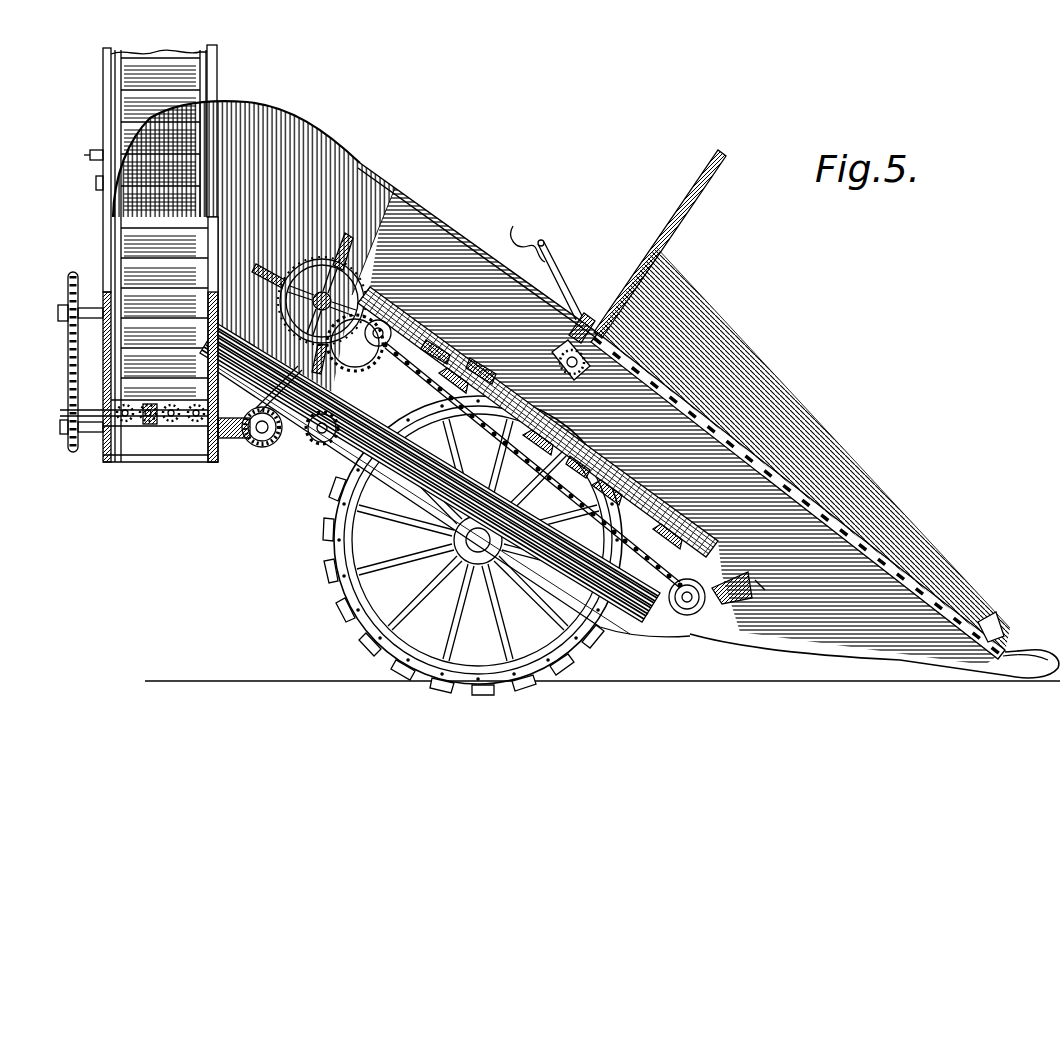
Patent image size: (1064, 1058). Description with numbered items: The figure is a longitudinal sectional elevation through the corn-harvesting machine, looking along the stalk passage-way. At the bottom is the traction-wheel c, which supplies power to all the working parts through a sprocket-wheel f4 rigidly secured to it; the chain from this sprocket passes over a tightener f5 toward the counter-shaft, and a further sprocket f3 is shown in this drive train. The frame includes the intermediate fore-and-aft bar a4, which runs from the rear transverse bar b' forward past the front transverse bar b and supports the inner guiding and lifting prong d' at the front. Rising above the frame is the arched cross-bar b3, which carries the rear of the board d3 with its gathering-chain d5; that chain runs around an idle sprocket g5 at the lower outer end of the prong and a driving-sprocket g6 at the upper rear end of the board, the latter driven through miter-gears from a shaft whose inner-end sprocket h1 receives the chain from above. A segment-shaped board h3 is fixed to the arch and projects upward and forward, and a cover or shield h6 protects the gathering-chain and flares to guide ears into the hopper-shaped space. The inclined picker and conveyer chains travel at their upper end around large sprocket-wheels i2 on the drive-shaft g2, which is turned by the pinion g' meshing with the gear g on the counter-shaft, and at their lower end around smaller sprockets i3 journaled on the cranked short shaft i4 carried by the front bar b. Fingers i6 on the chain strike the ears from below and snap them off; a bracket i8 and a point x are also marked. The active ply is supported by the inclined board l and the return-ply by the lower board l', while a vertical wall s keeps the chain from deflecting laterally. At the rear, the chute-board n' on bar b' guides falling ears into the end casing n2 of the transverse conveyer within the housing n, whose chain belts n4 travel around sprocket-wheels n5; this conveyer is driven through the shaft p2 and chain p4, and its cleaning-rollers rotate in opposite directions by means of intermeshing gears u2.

The housing n is at (254, 246).
The chute-board n' is at (174, 256).
The end casing n2 is at (104, 374).
The chain belts n4 is at (212, 96).
The sprocket-wheels n5 is at (110, 287).
The shaft p2 is at (194, 426).
The chain p4 is at (68, 398).
The intermeshing gears u2 is at (130, 426).
The rear transverse bar b' is at (238, 404).
The front transverse bar b is at (451, 519).
The arched cross-bar b3 is at (586, 362).
The sprocket wheel f3 is at (318, 446).
The sprocket-wheel f4 is at (345, 560).
The tightener f5 is at (268, 442).
The traction-wheel c is at (345, 622).
The intermediate fore-and-aft bar a4 is at (530, 560).
The inclined board l is at (532, 465).
The lower board l' is at (430, 473).
The large sprocket-wheels i2 is at (300, 285).
The smaller sprockets i3 is at (738, 582).
The short shaft i4 is at (670, 592).
The fingers i6 is at (612, 608).
The bracket i8 is at (580, 468).
The gear g is at (443, 339).
The pinion g' is at (538, 414).
The drive-shaft g2 is at (374, 292).
The idle sprockets g5 is at (985, 618).
The driving-sprockets g6 is at (578, 305).
The sprocket h1 is at (560, 398).
The segment-shaped board h3 is at (668, 218).
The cover or shield h6 is at (878, 494).
The board d3 is at (497, 278).
The gathering-chain d5 is at (768, 494).
The inner guiding and lifting prong d' is at (1026, 627).
The vertical wall s is at (535, 240).
The point x is at (759, 573).